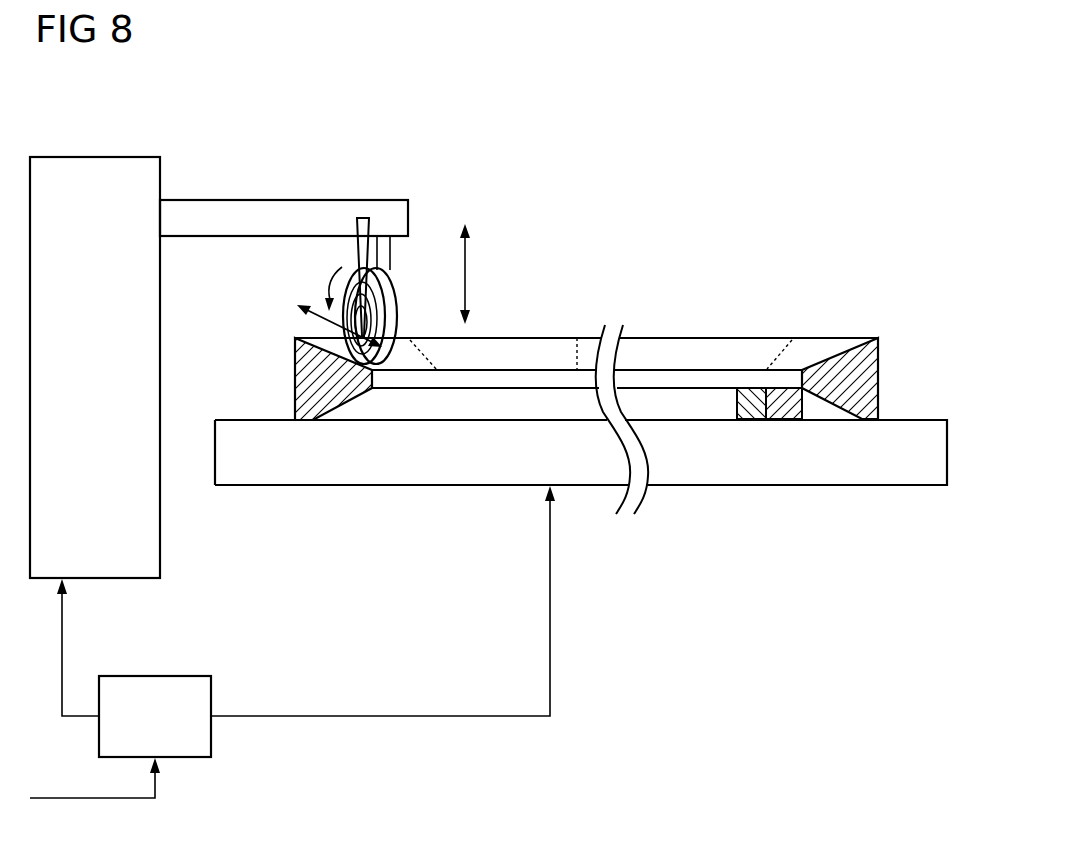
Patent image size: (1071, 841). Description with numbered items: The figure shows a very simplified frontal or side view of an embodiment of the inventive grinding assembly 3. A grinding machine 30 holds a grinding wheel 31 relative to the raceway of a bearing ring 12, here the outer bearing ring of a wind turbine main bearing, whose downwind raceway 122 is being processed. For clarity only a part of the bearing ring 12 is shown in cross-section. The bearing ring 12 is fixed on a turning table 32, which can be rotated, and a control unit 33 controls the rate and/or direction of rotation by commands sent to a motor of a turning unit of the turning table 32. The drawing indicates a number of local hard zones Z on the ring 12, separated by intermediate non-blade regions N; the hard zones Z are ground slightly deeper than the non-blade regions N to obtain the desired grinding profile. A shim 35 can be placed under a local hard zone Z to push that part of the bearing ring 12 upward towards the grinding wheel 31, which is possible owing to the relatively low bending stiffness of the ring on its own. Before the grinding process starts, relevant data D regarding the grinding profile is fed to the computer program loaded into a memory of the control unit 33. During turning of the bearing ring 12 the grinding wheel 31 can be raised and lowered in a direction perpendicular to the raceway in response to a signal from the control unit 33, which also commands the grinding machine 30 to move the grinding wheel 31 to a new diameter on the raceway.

The machining device 3 is at (830, 208).
The outer bearing ring 12 is at (870, 374).
The outer ring downwind raceway 122 is at (707, 343).
The grinding machine 30 is at (88, 168).
The grinding wheel 31 is at (388, 292).
The turning table 32 is at (735, 470).
The control unit 33 is at (213, 744).
The shim 35 is at (795, 408).
The local hard zone Z is at (535, 350).
The non-blade region N is at (648, 350).
The data D is at (65, 795).